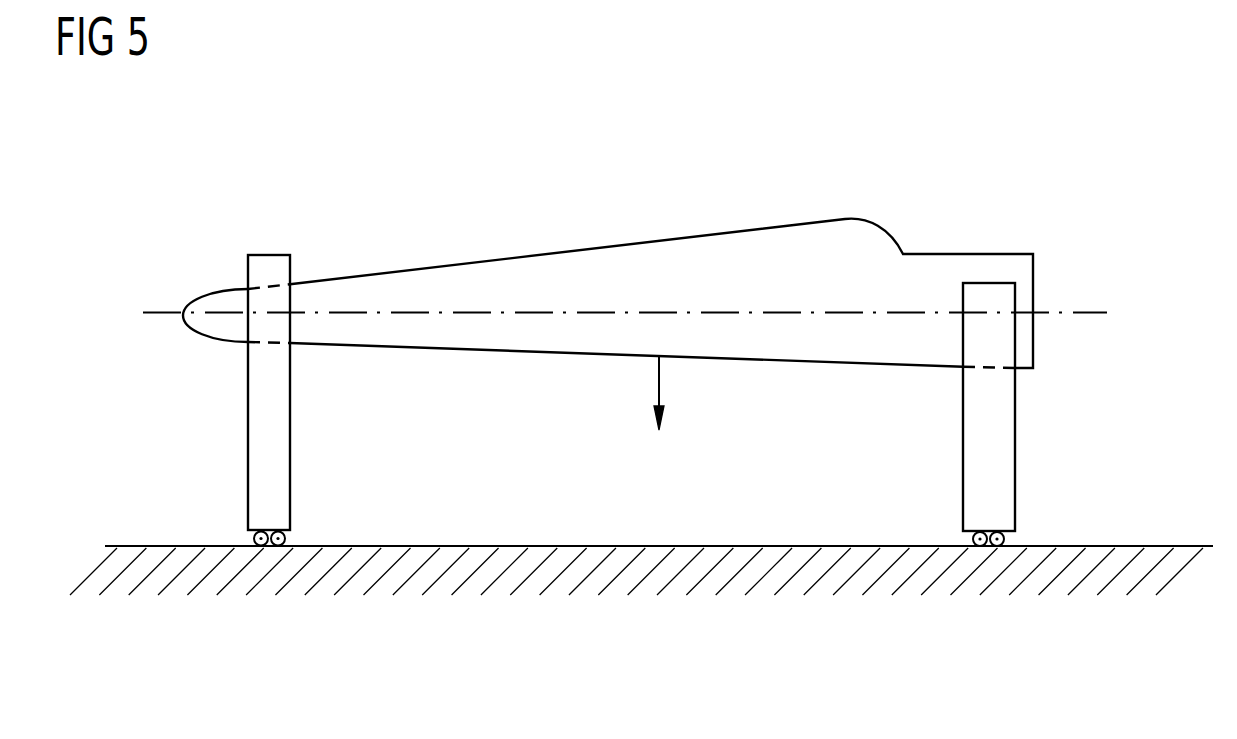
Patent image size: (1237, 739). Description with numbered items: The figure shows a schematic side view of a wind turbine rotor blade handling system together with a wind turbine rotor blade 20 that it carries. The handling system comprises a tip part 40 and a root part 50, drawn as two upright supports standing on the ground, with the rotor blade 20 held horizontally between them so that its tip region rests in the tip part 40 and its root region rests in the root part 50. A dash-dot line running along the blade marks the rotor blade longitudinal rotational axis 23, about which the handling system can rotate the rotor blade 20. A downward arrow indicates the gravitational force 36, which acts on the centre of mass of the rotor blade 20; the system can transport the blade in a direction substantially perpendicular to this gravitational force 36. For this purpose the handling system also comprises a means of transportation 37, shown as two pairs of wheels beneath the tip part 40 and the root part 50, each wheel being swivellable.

The wind turbine rotor blade 20 is at (657, 254).
The rotor blade longitudinal rotational axis 23 is at (1098, 310).
The gravitational force 36 is at (659, 381).
The means of transportation 37 is at (270, 548).
The tip part 40 is at (268, 265).
The root part 50 is at (1003, 470).